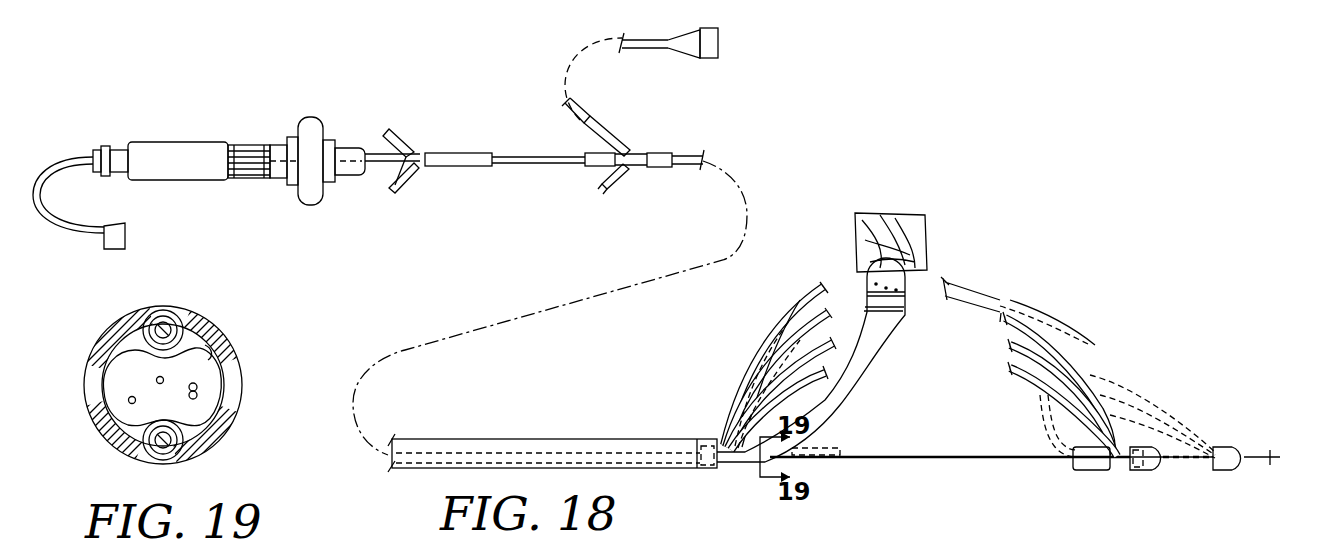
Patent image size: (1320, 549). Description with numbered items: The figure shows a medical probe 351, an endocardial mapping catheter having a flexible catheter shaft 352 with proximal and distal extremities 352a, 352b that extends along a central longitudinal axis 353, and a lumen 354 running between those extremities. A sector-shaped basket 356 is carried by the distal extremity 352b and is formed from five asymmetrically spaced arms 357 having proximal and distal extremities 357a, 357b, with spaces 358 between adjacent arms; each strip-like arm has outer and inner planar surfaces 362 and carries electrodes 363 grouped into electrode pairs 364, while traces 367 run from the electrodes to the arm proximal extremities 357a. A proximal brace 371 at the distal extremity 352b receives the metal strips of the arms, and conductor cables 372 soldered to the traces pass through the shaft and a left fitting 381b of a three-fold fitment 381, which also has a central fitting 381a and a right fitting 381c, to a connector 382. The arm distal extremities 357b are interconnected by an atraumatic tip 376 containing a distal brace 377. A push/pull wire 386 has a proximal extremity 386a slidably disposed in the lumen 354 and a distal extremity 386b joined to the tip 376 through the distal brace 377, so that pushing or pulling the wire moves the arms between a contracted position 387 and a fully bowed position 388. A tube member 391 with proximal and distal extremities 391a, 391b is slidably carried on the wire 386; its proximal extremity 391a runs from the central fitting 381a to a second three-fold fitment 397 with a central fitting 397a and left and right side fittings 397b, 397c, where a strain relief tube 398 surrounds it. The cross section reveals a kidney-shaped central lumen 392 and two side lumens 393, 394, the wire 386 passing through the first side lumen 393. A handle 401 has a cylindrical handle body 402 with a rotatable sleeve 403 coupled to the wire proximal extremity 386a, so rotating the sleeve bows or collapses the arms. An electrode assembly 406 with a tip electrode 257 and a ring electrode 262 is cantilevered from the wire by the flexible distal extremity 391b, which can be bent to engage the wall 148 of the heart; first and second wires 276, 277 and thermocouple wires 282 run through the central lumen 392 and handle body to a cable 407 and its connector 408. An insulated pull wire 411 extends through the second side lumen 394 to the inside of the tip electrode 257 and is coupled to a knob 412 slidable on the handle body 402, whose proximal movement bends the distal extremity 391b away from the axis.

In FIG. 18, the wall of the heart 148 is at (900, 226).
In FIG. 18, the tip electrode 257 is at (903, 298).
In FIG. 18, the ring electrode 262 is at (897, 313).
In FIG. 19, the first wire 276 is at (159, 376).
In FIG. 19, the second wire 277 is at (129, 403).
In FIG. 19, the thermocouple wires 282 is at (200, 390).
In FIG. 18, the medical probe 351 is at (1117, 378).
In FIG. 18, the catheter shaft 352 is at (552, 452).
In FIG. 18, the proximal extremity of catheter shaft 352a is at (676, 160).
In FIG. 18, the distal extremity of catheter shaft 352b is at (692, 441).
In FIG. 18, the central longitudinal axis 353 is at (1268, 461).
In FIG. 18, the lumen 354 is at (513, 455).
In FIG. 18, the sector-shaped basket 356 is at (1096, 366).
In FIG. 18, the arms 357 is at (1025, 438).
In FIG. 18, the proximal extremities of arms 357a is at (753, 360).
In FIG. 18, the distal extremities of arms 357b is at (1109, 466).
In FIG. 18, the spaces 358 is at (787, 333).
In FIG. 18, the outer and inner planar surfaces 362 is at (803, 300).
In FIG. 18, the electrodes 363 is at (1054, 326).
In FIG. 18, the electrode pairs 364 is at (1064, 330).
In FIG. 18, the traces 367 is at (760, 352).
In FIG. 18, the proximal brace 371 is at (700, 467).
In FIG. 18, the conductor cables 372 is at (585, 124).
In FIG. 18, the atraumatic tip 376 is at (1231, 446).
In FIG. 18, the distal brace 377 is at (1140, 472).
In FIG. 18, the three-fold fitment 381 is at (614, 151).
In FIG. 18, the central fitting 381a is at (594, 156).
In FIG. 18, the left fitting 381b is at (618, 146).
In FIG. 18, the right fitting 381c is at (609, 189).
In FIG. 18, the connector 382 is at (685, 50).
In FIG. 18, the push/pull wire 386 is at (991, 476).
In FIG. 19, the push/pull wire 386 is at (180, 447).
In FIG. 18, the proximal extremity of push/pull wire 386a is at (277, 152).
In FIG. 18, the distal extremity of push/pull wire 386b is at (1012, 462).
In FIG. 18, the contracted position 387 is at (1177, 416).
In FIG. 18, the fully bowed position 388 is at (958, 272).
In FIG. 18, the tube member 391 is at (844, 381).
In FIG. 19, the tube member 391 is at (228, 425).
In FIG. 18, the proximal extremity of tube member 391a is at (565, 164).
In FIG. 18, the distal extremity of tube member 391b is at (862, 352).
In FIG. 19, the central lumen 392 is at (210, 342).
In FIG. 19, the first side lumen 393 is at (148, 448).
In FIG. 19, the second side lumen 394 is at (157, 321).
In FIG. 18, the three-fold fitment 397 is at (418, 148).
In FIG. 18, the central fitting 397a is at (398, 172).
In FIG. 18, the left side fitting 397b is at (405, 134).
In FIG. 18, the right side fitting 397c is at (408, 178).
In FIG. 18, the strain relief tube 398 is at (478, 153).
In FIG. 18, the handle 401 is at (200, 177).
In FIG. 18, the handle body 402 is at (182, 172).
In FIG. 18, the rotatable sleeve 403 is at (258, 178).
In FIG. 18, the electrode assembly 406 is at (860, 283).
In FIG. 18, the cable 407 is at (36, 180).
In FIG. 18, the connector 408 is at (108, 242).
In FIG. 18, the pull wire 411 is at (348, 158).
In FIG. 19, the pull wire 411 is at (171, 322).
In FIG. 18, the knob 412 is at (325, 195).